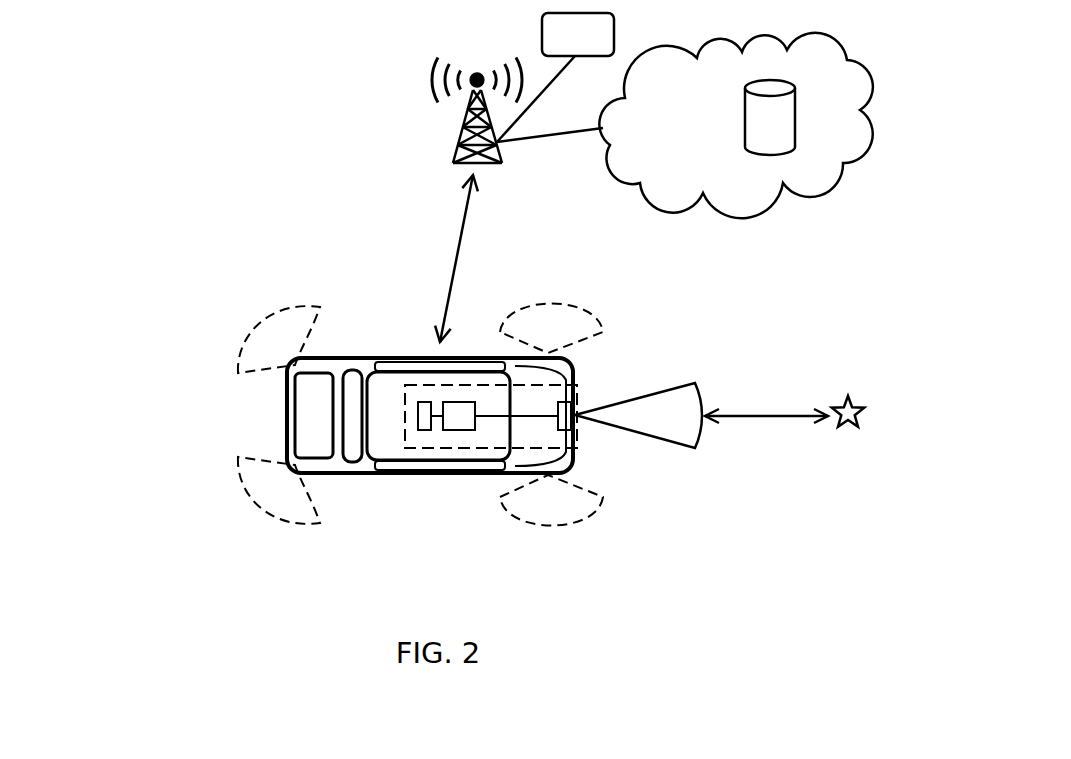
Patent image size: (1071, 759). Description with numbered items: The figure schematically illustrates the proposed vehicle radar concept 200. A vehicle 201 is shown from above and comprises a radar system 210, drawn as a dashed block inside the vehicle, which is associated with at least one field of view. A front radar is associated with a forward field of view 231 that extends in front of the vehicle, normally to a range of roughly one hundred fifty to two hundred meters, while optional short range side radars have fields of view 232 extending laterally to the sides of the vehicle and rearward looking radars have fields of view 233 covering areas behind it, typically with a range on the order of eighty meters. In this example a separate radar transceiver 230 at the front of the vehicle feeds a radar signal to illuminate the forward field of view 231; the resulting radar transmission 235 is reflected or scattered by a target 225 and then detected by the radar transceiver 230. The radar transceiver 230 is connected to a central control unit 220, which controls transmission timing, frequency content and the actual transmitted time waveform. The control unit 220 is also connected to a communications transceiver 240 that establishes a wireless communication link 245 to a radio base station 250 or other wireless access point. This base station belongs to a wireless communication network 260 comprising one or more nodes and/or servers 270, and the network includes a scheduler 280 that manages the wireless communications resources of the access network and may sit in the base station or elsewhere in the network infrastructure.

The vehicle radar concept 200 is at (132, 112).
The vehicle 201 is at (372, 473).
The radar system 210 is at (472, 448).
The central control unit 220 is at (453, 430).
The target 225 is at (860, 420).
The radar transceiver 230 is at (576, 424).
The forward field of view 231 is at (649, 423).
The side fields of view 232 is at (535, 338).
The rearward fields of view 233 is at (259, 348).
The radar transmission 235 is at (766, 403).
The communications transceiver 240 is at (427, 430).
The wireless communication link 245 is at (441, 258).
The radio base station 250 is at (457, 130).
The wireless communication network 260 is at (667, 131).
The servers 270 is at (770, 117).
The scheduler 280 is at (555, 77).